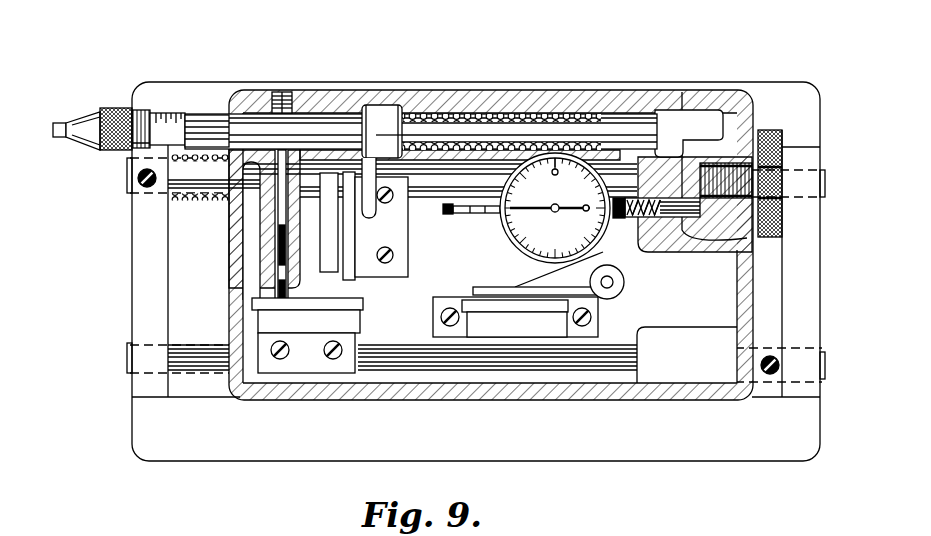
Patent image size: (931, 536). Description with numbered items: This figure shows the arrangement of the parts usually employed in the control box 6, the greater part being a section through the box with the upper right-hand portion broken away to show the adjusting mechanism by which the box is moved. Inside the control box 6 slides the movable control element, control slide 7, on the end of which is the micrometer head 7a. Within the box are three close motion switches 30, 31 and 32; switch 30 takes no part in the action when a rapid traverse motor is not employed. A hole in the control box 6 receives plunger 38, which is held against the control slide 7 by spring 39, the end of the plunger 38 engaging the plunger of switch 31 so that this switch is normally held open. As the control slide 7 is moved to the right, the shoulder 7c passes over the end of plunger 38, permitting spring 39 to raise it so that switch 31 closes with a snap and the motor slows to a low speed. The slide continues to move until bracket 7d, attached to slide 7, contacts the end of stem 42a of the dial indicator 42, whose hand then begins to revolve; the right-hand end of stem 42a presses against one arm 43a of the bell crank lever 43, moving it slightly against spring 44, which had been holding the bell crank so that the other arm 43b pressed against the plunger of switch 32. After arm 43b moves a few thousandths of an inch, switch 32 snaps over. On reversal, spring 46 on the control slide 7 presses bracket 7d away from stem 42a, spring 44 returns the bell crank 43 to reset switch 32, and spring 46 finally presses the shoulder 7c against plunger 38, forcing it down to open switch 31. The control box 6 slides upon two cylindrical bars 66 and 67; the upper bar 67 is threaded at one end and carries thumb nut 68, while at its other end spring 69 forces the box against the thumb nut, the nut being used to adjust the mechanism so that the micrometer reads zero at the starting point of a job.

The control box 6 is at (472, 92).
The control slide 7 is at (333, 113).
The micrometer head 7a is at (100, 118).
The shoulder 7c is at (228, 120).
The bracket 7d is at (397, 110).
The spring 46 is at (563, 116).
The thumb nut 68 is at (772, 130).
The upper bar 67 is at (205, 199).
The spring 69 is at (223, 200).
The plunger 38 is at (276, 225).
The spring 39 is at (290, 262).
The close motion switch 30 is at (357, 258).
The close motion switch 31 is at (360, 322).
The stem 42a is at (446, 213).
The dial indicator 42 is at (505, 238).
The arm of bell crank lever 43b is at (490, 288).
The bell crank lever 43 is at (625, 292).
The arm of bell crank lever 43a is at (623, 220).
The spring 44 is at (642, 208).
The cylindrical bar 66 is at (192, 345).
The close motion switch 32 is at (505, 337).